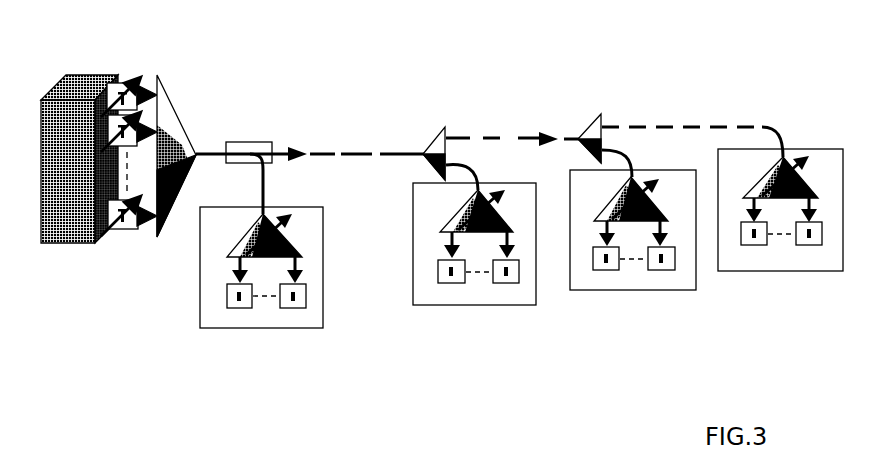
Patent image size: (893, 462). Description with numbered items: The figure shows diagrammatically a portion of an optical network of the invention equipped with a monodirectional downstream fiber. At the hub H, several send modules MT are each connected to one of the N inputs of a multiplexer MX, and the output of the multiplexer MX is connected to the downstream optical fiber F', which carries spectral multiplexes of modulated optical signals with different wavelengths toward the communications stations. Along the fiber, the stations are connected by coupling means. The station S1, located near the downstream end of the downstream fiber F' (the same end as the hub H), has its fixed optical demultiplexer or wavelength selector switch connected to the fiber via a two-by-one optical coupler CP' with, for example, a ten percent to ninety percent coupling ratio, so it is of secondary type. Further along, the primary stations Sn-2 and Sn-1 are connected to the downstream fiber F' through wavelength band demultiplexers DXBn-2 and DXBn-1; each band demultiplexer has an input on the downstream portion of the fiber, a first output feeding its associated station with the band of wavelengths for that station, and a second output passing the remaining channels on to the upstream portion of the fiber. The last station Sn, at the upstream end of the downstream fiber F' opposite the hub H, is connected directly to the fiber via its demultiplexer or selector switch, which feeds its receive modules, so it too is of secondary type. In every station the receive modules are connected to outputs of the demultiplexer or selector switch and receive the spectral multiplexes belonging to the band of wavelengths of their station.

The hub H is at (87, 76).
The send module MT is at (121, 232).
The multiplexer MX is at (160, 88).
The 2×1 optical coupler CP' is at (254, 123).
The communications station S1 is at (230, 273).
The wavelength band demultiplexer DXBn-2 is at (440, 127).
The downstream optical fiber F' is at (457, 82).
The primary station Sn-2 is at (443, 269).
The wavelength band demultiplexer DXBn-1 is at (598, 114).
The primary station Sn-1 is at (643, 216).
The last station Sn is at (795, 211).